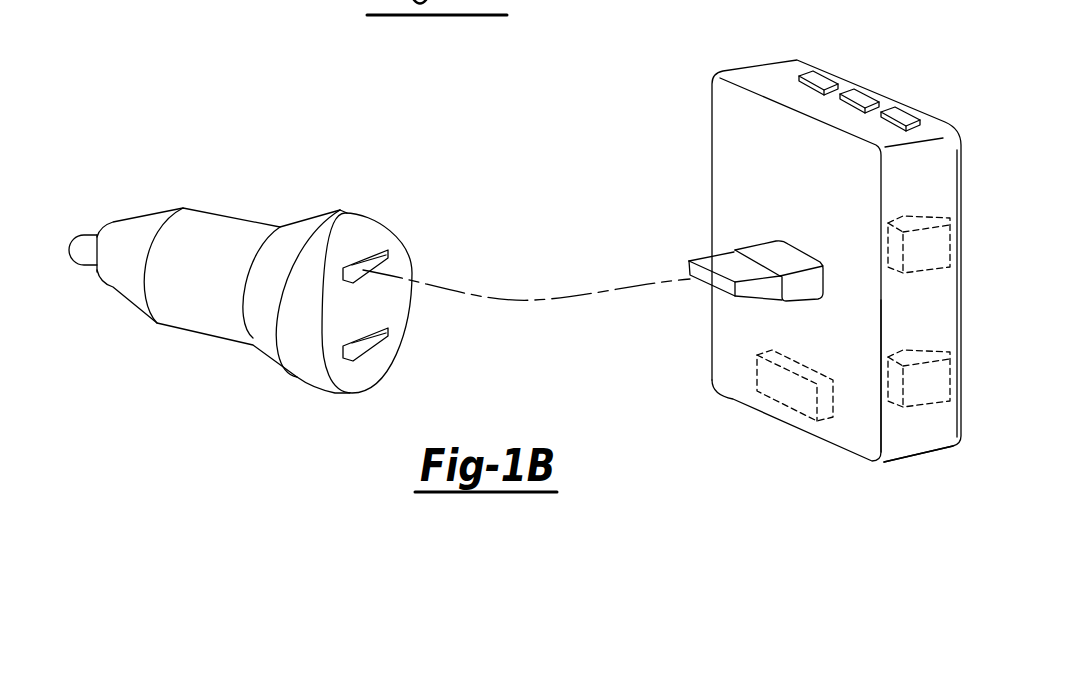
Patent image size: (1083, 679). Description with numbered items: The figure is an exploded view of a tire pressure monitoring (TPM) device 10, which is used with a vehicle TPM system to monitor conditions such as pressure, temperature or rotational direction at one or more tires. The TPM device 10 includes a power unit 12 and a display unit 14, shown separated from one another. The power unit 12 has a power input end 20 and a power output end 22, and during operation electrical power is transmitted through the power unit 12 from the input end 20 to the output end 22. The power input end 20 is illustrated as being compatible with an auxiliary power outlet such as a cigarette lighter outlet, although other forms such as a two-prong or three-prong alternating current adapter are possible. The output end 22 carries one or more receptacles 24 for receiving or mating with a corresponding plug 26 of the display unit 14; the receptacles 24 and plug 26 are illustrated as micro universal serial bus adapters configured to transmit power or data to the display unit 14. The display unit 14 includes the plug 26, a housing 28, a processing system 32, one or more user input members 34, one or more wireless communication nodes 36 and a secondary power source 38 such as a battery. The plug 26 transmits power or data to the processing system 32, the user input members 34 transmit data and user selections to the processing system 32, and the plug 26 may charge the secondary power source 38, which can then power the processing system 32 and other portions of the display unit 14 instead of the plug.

The tire pressure monitoring (TPM) device 10 is at (938, 100).
The power unit 12 is at (213, 238).
The display unit 14 is at (735, 72).
The power input end 20 is at (90, 245).
The power output end 22 is at (374, 230).
The receptacles 24 is at (363, 272).
The plug 26 is at (727, 263).
The housing 28 is at (900, 430).
The processing system 32 is at (758, 390).
The user input members 34 is at (815, 75).
The wireless communication nodes 36 is at (887, 247).
The secondary power source 38 is at (900, 377).